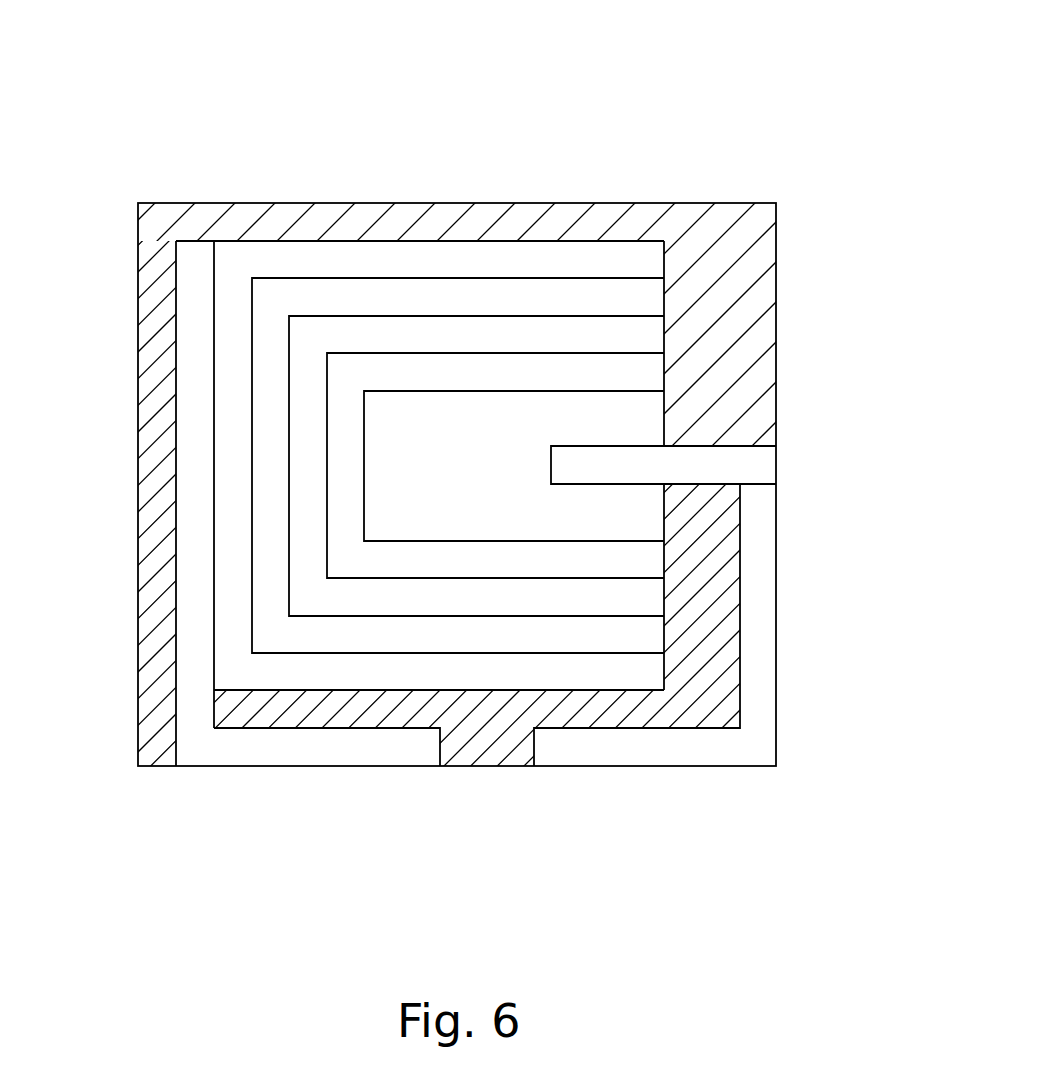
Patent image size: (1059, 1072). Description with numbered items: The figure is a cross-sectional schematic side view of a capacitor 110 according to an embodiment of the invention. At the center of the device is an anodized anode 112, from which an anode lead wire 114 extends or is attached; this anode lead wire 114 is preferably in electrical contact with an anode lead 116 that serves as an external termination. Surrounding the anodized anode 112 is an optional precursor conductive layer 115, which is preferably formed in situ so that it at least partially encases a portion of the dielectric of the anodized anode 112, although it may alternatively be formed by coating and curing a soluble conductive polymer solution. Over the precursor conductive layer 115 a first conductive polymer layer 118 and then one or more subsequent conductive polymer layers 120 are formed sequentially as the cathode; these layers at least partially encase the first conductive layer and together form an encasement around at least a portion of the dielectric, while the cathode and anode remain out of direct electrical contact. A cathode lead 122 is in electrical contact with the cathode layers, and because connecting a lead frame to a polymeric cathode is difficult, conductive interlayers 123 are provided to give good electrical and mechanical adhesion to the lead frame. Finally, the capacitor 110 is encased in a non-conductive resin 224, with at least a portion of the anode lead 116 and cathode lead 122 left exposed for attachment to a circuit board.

The capacitor 110 is at (667, 178).
The anodized anode 112 is at (473, 425).
The anode lead wire 114 is at (750, 470).
The precursor conductive layer 115 is at (408, 368).
The anode lead 116 is at (673, 753).
The first conductive polymer layer 118 is at (366, 335).
The subsequent conductive polymer layer 120 is at (325, 295).
The cathode lead 122 is at (192, 695).
The conductive interlayers 123 is at (277, 255).
The non-conductive resin 224 is at (160, 480).